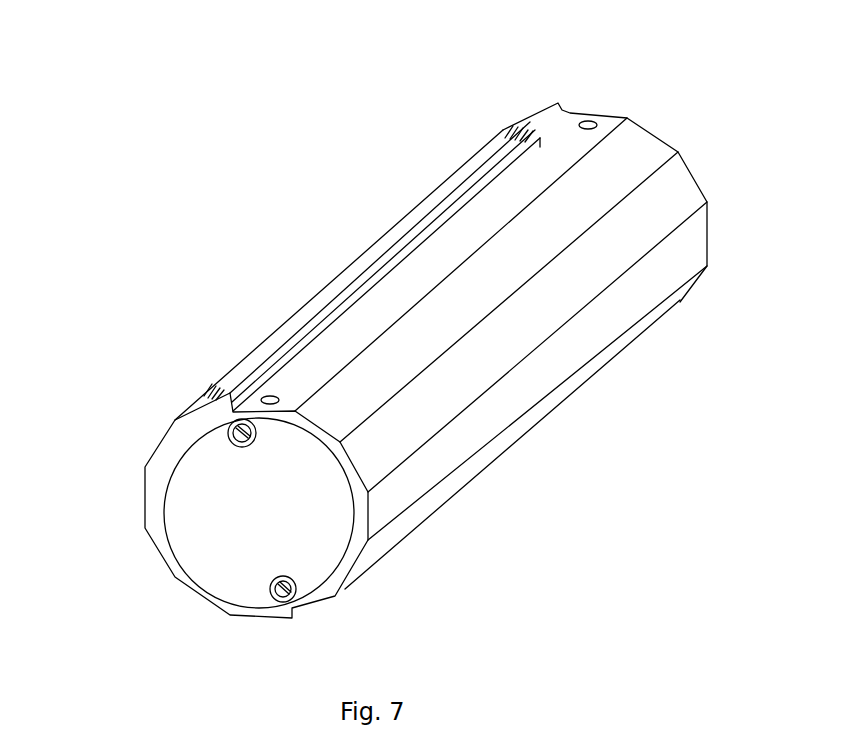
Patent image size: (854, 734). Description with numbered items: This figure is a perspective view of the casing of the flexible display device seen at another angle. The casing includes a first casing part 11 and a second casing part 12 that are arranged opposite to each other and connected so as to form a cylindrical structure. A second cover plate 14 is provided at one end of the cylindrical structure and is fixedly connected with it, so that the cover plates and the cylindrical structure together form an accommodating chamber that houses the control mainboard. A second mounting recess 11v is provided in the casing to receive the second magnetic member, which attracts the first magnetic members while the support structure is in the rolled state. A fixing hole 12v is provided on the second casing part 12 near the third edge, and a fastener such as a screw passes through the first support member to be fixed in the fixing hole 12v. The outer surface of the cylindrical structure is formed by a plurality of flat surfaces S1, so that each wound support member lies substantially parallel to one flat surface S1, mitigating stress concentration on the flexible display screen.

The first casing part 11 is at (176, 436).
The second mounting recess 11v is at (222, 382).
The second casing part 12 is at (325, 597).
The fixing hole 12v is at (267, 399).
The second cover plate 14 is at (325, 482).
The flat surface S1 is at (300, 315).